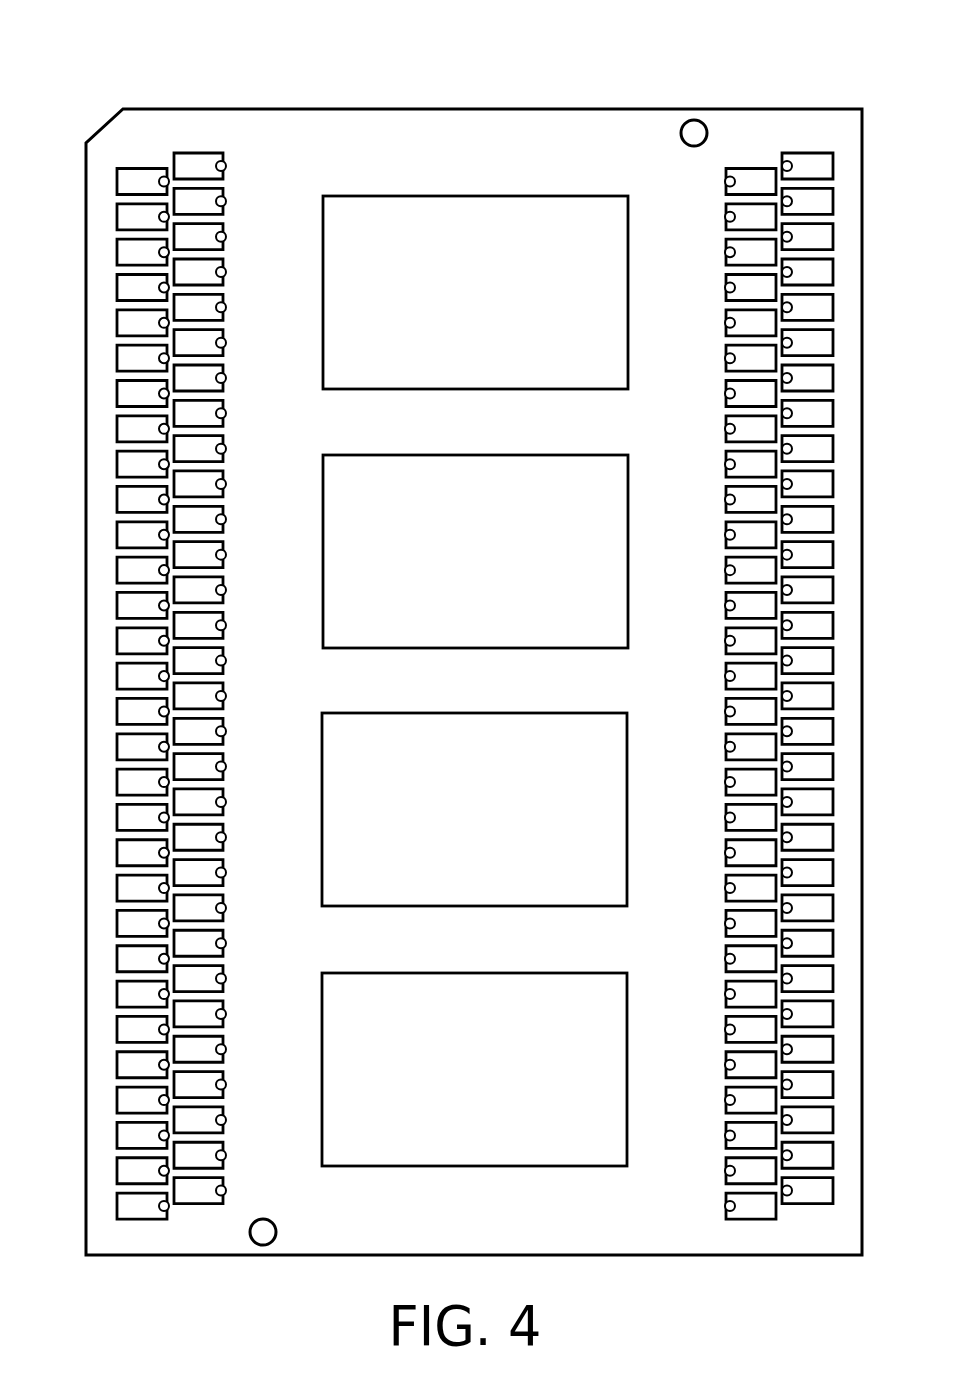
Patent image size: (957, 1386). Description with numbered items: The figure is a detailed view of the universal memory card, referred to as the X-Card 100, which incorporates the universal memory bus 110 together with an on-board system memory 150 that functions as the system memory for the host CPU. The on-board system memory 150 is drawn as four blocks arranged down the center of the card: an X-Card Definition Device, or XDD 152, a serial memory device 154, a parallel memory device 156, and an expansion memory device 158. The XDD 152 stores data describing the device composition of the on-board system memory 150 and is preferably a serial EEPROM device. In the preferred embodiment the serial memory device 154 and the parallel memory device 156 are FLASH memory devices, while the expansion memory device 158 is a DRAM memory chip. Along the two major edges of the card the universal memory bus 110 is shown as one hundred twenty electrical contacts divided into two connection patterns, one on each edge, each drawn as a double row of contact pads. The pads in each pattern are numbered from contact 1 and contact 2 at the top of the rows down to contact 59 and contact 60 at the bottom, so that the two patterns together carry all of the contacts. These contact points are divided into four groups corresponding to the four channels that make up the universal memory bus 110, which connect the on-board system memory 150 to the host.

The X-Card 100 is at (474, 630).
The universal memory bus 110 is at (484, 629).
The on-board system memory 150 is at (455, 1231).
The X-Card Definition Device (XDD) 152 is at (464, 355).
The serial memory device 154 is at (464, 616).
The parallel memory device 156 is at (464, 874).
The expansion memory device 158 is at (464, 1134).
The connector pin 1 is at (503, 153).
The connector pin 2 is at (446, 169).
The connector pin 59 is at (502, 1206).
The connector pin 60 is at (444, 1223).